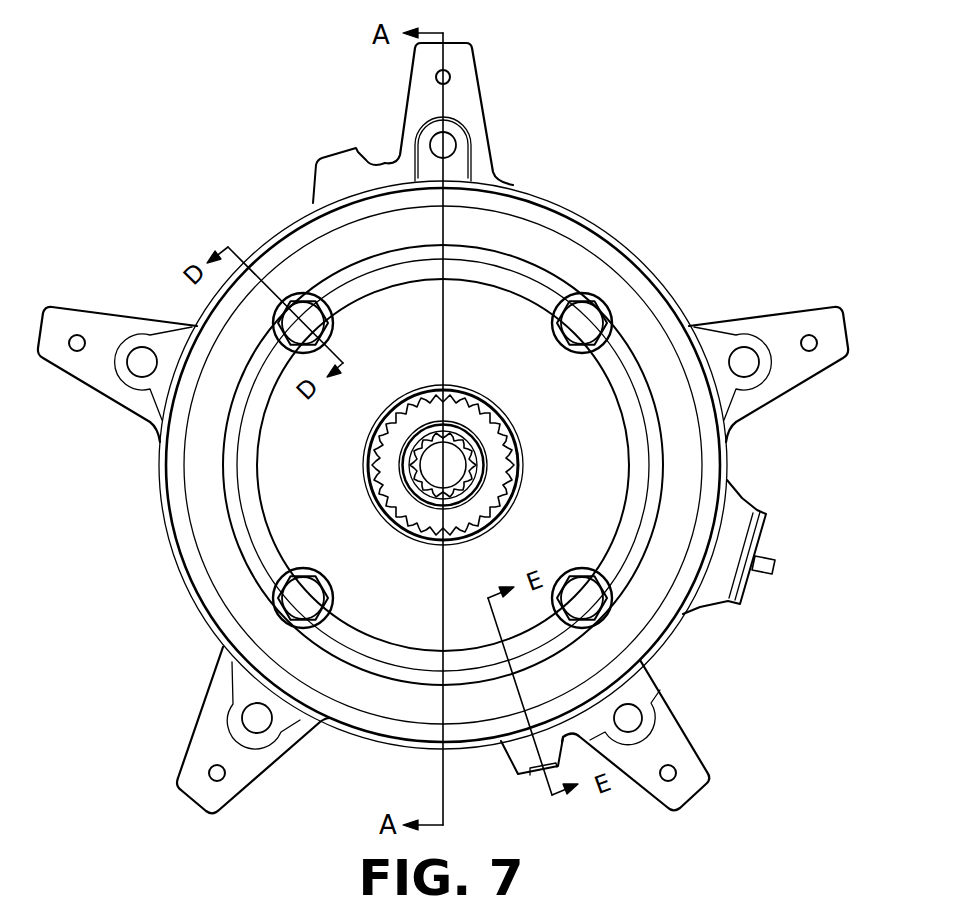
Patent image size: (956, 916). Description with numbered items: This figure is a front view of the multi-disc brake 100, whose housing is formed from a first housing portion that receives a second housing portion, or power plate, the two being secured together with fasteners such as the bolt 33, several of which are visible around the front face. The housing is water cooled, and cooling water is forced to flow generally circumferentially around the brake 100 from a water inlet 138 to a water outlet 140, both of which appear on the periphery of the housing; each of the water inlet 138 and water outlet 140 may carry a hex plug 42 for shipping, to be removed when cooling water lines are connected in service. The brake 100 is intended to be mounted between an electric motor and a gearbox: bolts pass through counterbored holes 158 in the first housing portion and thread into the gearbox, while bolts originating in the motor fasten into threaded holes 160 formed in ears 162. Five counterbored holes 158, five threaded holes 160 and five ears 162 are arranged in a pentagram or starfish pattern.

The multi-disc brake 100 is at (161, 138).
The bolt 33 is at (582, 323).
The hex plug 42 is at (667, 637).
The water inlet 138 is at (690, 628).
The water outlet 140 is at (737, 452).
The counterbored hole 158 is at (435, 145).
The threaded hole 160 is at (450, 82).
The ear 162 is at (458, 114).